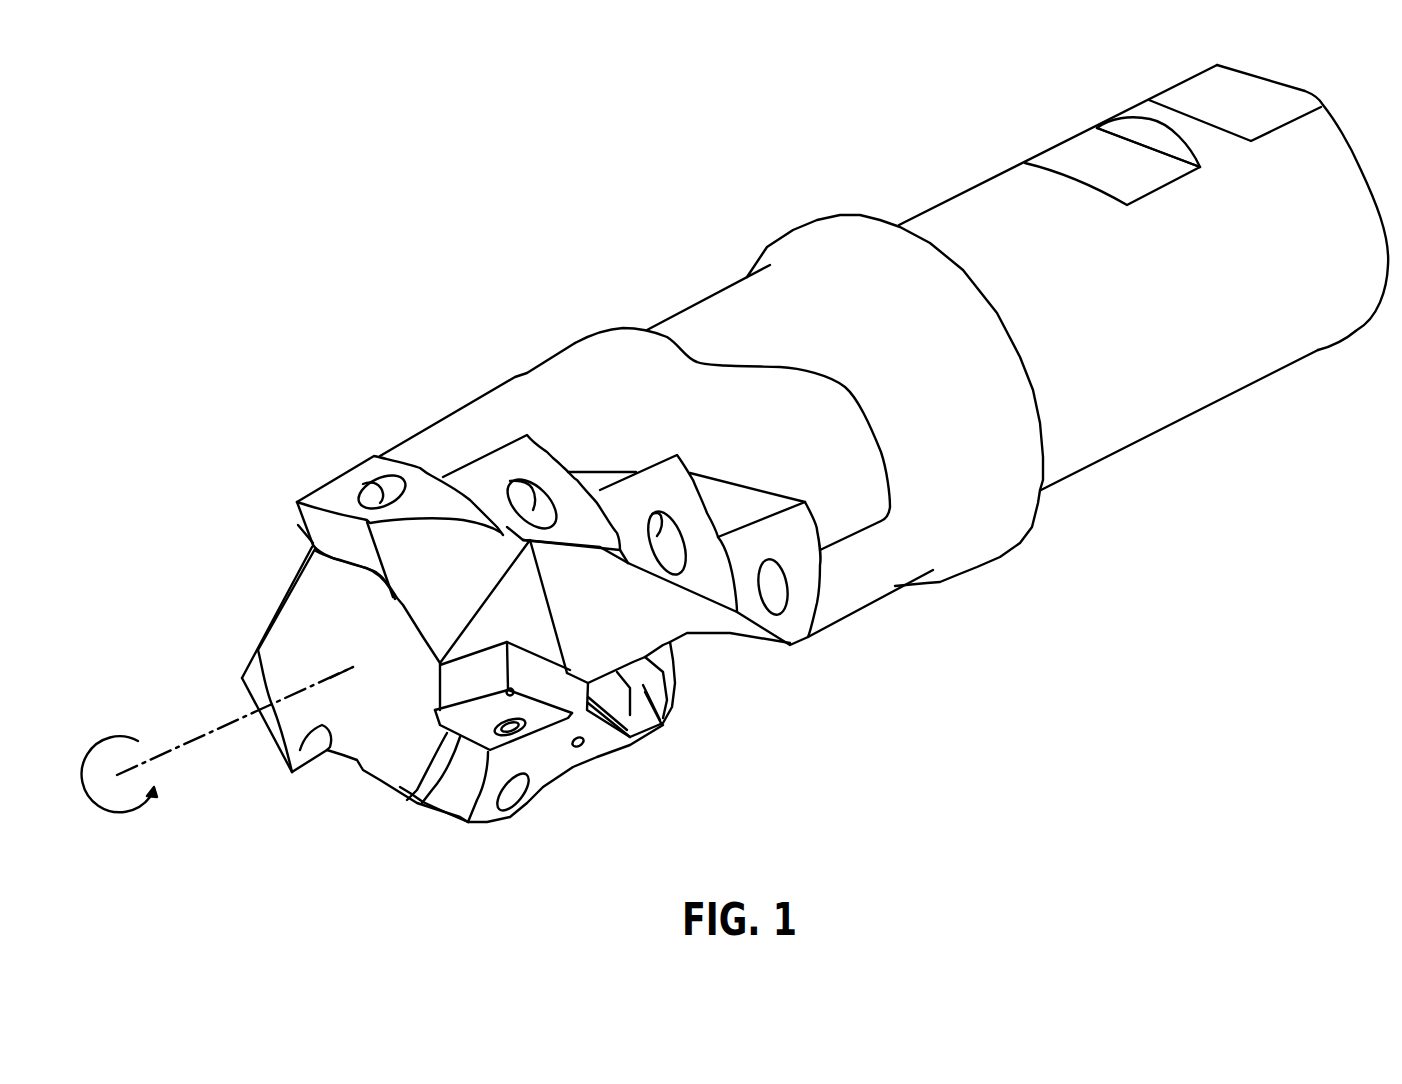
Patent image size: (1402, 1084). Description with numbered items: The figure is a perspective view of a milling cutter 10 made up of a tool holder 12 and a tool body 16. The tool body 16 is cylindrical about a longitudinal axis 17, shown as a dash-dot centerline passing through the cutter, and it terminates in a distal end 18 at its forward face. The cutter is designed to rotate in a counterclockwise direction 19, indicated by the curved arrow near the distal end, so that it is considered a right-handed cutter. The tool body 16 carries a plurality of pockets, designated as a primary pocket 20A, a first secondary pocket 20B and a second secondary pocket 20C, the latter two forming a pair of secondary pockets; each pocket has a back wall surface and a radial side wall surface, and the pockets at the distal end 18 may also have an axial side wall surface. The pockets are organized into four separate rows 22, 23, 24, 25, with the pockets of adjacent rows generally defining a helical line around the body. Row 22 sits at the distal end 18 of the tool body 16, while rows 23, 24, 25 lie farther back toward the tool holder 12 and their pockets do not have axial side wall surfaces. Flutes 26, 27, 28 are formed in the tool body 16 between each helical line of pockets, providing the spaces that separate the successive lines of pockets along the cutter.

The milling cutter 10 is at (478, 164).
The tool holder 12 is at (984, 203).
The tool body 16 is at (603, 362).
The longitudinal axis 17 is at (202, 732).
The distal end 18 is at (353, 667).
The counterclockwise direction 19 is at (138, 813).
The primary pocket 20A is at (538, 713).
The first secondary pocket 20B is at (313, 750).
The second secondary pocket 20C is at (300, 525).
The row of pockets 22 is at (340, 473).
The row of pockets 23 is at (485, 457).
The row of pockets 24 is at (613, 472).
The row of pockets 25 is at (790, 505).
The flute 26 is at (640, 627).
The flute 27 is at (362, 782).
The flute 28 is at (282, 577).